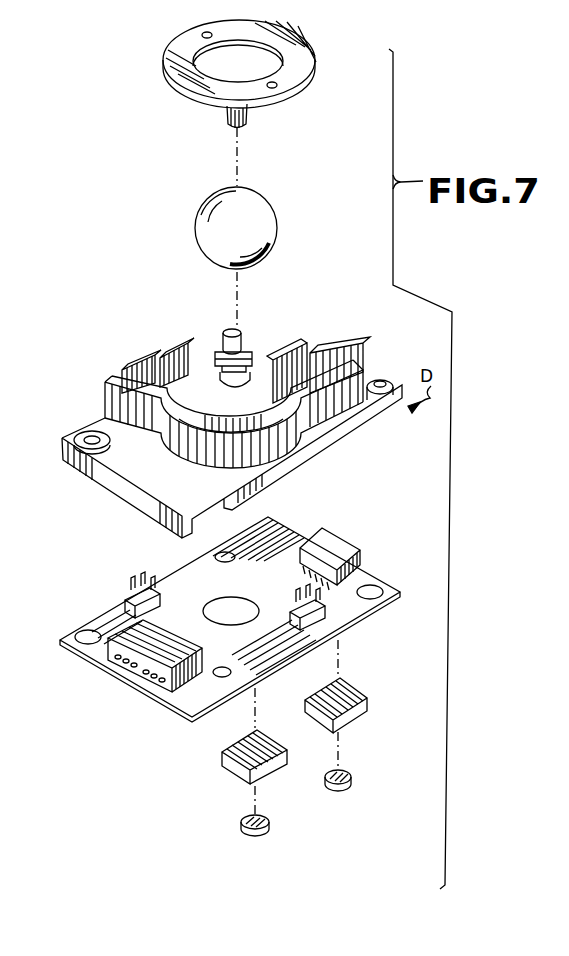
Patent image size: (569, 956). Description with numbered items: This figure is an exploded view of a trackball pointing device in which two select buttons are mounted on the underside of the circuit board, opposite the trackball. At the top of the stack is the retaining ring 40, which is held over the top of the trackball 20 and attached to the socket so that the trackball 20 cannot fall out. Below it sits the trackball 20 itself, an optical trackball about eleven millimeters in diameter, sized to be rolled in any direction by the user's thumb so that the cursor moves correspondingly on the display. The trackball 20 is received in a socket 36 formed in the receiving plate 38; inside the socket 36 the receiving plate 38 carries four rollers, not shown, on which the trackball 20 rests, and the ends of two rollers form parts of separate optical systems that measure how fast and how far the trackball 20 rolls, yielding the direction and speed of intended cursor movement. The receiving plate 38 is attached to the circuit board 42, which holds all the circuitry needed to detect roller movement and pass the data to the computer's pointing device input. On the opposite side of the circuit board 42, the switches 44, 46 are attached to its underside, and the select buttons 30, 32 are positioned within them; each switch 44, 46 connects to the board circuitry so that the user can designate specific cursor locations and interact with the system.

The retaining ring 40 is at (177, 90).
The trackball 20 is at (197, 225).
The socket 36 is at (228, 402).
The receiving plate 38 is at (128, 492).
The circuit board 42 is at (175, 708).
The switch 44 is at (220, 758).
The switch 46 is at (367, 697).
The select button 30 is at (240, 823).
The select button 32 is at (353, 778).